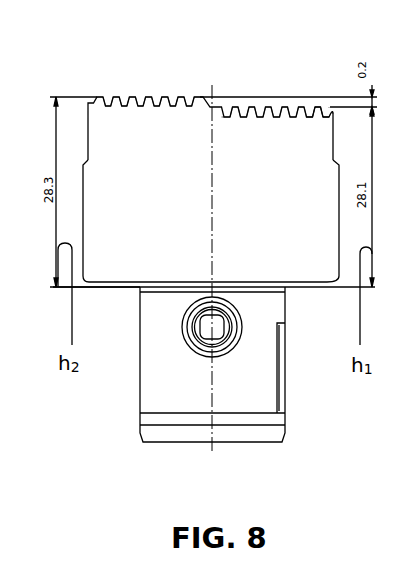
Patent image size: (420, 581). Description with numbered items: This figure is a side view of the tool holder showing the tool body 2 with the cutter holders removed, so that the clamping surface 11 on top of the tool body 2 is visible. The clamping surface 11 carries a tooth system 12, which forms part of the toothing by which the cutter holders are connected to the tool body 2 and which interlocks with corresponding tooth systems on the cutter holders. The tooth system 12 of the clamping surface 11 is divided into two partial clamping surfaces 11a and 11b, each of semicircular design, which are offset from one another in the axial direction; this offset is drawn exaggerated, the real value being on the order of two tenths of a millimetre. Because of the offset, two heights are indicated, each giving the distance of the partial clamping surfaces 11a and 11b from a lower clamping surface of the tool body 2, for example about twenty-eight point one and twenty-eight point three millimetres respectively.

The tool body 2 is at (153, 93).
The clamping surface 11 is at (228, 104).
The partial clamping surface 11a is at (113, 97).
The partial clamping surface 11b is at (292, 104).
The tooth system 12 is at (312, 112).